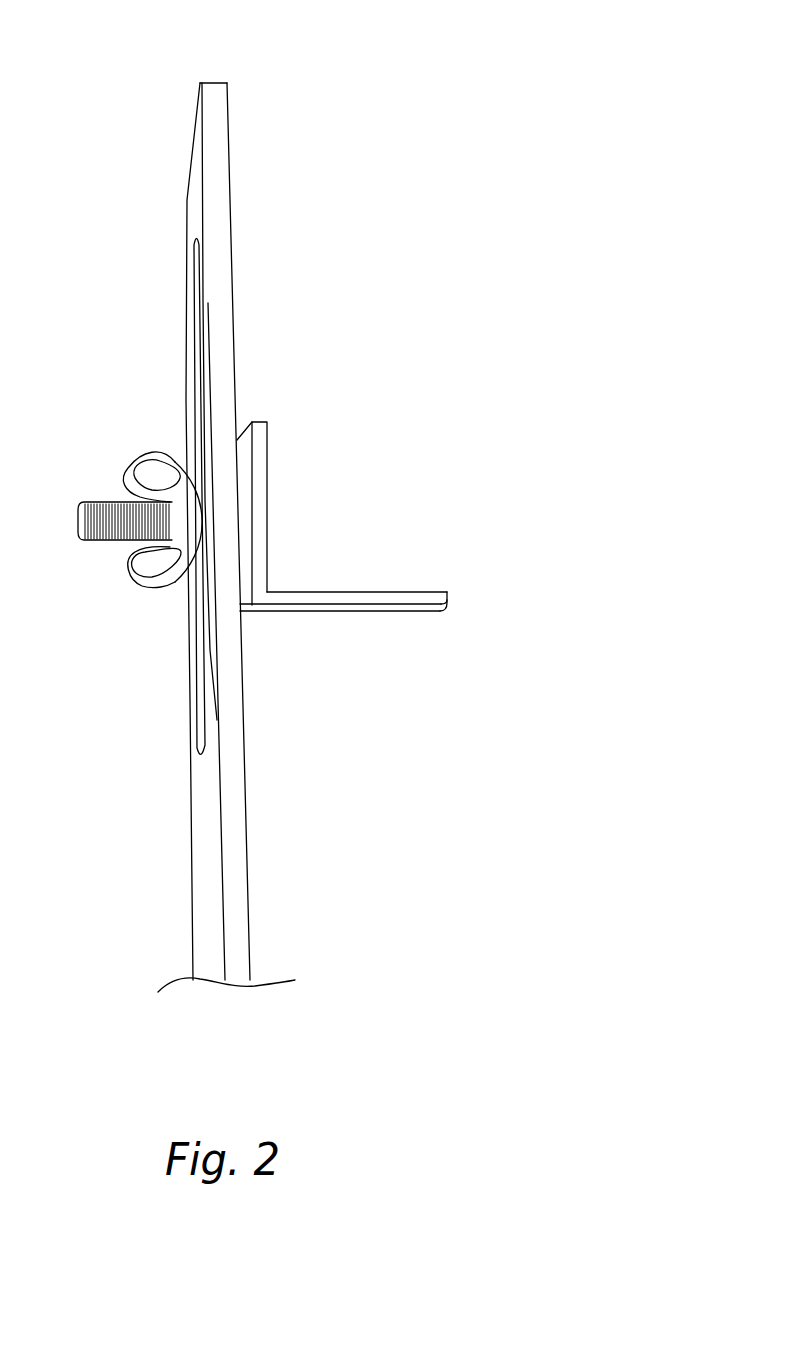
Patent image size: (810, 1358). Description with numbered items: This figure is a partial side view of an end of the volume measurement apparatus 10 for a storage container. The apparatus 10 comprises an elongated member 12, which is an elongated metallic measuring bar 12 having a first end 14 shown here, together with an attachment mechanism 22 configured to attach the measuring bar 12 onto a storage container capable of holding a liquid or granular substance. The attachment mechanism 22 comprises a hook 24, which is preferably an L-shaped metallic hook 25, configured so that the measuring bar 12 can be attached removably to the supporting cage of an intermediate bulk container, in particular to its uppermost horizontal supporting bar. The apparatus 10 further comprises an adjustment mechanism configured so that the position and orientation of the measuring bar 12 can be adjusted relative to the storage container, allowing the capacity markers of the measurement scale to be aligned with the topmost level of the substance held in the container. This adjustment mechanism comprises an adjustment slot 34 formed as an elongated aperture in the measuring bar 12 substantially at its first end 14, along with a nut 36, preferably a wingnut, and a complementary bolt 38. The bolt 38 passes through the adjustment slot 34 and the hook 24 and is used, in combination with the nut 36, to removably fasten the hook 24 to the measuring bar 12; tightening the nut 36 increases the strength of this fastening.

The volume measurement apparatus 10 is at (487, 130).
The elongated member 12 is at (233, 749).
The first end 14 is at (212, 82).
The attachment mechanism 22 is at (304, 598).
The hook 24 is at (366, 598).
The L-shaped metallic hook 25 is at (435, 598).
The adjustment slot 34 is at (203, 668).
The nut 36 is at (148, 472).
The bolt 38 is at (96, 502).